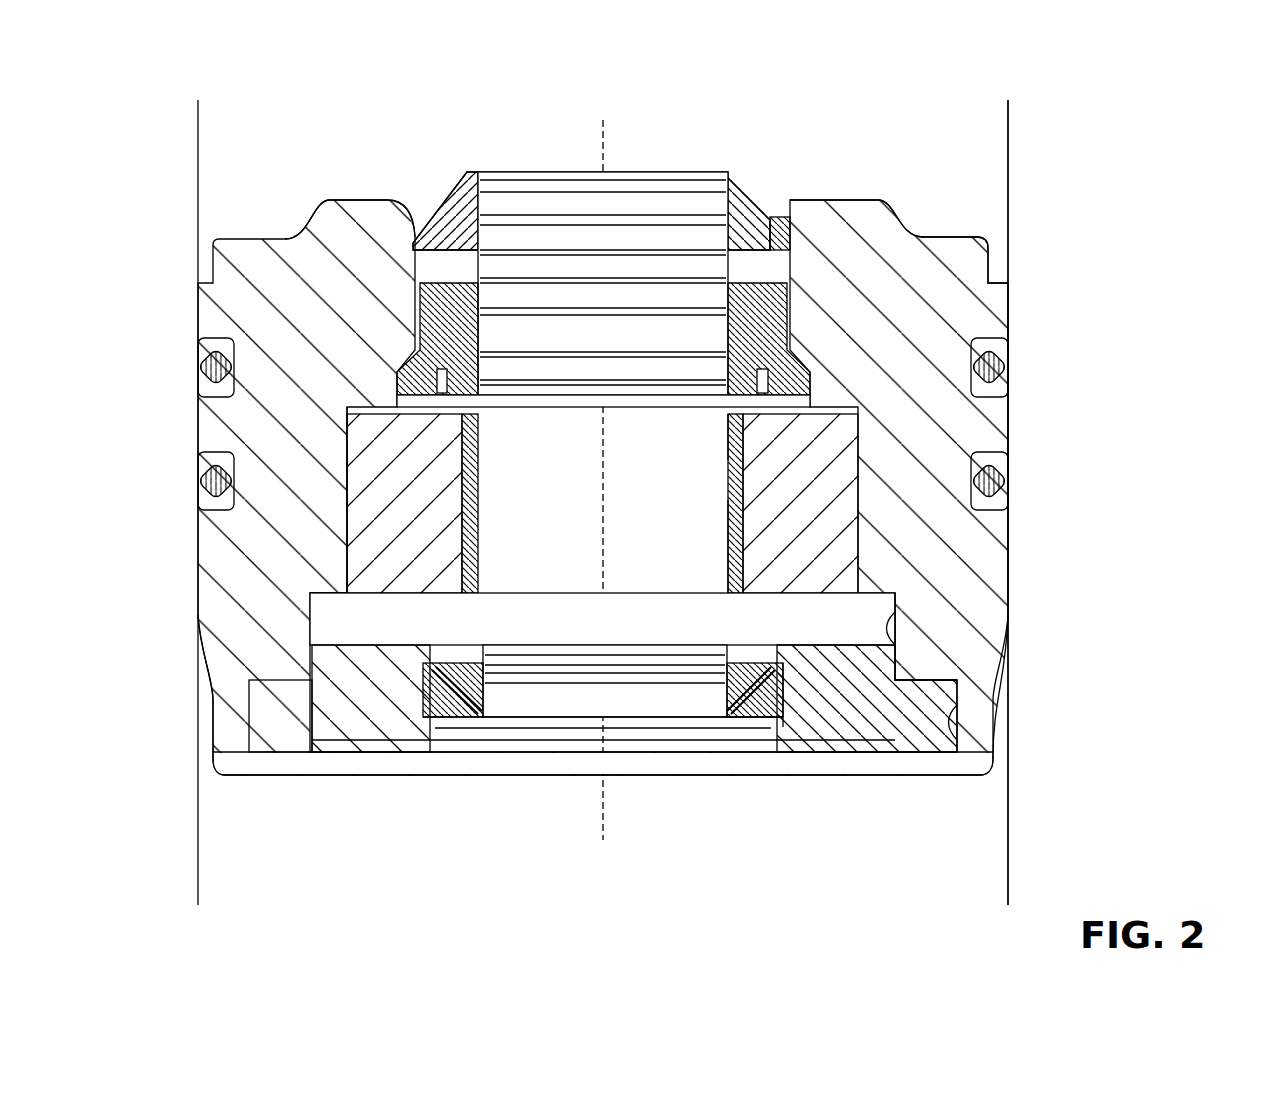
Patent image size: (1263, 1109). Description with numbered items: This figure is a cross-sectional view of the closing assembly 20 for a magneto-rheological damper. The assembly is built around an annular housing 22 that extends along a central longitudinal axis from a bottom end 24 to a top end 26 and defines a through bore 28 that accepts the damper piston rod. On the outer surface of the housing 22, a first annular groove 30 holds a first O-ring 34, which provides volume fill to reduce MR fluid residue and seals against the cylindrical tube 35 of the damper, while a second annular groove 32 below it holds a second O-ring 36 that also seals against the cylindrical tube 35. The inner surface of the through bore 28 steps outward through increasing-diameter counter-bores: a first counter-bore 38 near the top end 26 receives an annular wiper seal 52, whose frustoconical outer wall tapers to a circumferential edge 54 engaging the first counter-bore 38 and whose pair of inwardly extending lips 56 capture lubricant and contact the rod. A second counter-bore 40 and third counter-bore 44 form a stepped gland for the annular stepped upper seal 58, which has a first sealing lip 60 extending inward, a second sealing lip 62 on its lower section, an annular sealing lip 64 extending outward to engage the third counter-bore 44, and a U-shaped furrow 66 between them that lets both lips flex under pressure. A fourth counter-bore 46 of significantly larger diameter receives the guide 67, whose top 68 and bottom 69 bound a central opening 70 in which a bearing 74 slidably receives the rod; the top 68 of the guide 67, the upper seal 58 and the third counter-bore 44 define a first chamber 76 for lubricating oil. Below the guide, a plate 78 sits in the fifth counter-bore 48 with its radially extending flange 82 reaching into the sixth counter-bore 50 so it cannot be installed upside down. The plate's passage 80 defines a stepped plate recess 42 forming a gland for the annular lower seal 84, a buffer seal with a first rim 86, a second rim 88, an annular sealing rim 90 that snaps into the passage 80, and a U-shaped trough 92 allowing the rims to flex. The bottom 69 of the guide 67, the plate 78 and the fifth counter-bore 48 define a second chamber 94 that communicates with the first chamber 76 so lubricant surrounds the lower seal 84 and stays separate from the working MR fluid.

The closing assembly 20 is at (876, 110).
The annular housing 22 is at (902, 548).
The bottom end 24 is at (970, 775).
The top end 26 is at (950, 237).
The through bore 28 is at (430, 200).
The first annular groove 30 is at (198, 397).
The second annular groove 32 is at (197, 505).
The first O-ring 34 is at (1008, 362).
The cylindrical tube 35 is at (1008, 873).
The second O-ring 36 is at (1008, 490).
The first counter-bore 38 is at (398, 235).
The second counter-bore 40 is at (760, 322).
The plate recess 42 is at (427, 683).
The third counter-bore 44 is at (480, 487).
The fourth counter-bore 46 is at (357, 530).
The fifth counter-bore 48 is at (875, 655).
The sixth counter-bore 50 is at (973, 737).
The wiper seal 52 is at (748, 200).
The circumferential edge 54 is at (792, 247).
The inwardly extending lips 56 is at (483, 247).
The upper seal 58 is at (420, 290).
The first sealing lip 60 is at (517, 313).
The second sealing lip 62 is at (522, 400).
The annular sealing lip 64 is at (787, 363).
The U-shaped furrow 66 is at (780, 385).
The guide 67 is at (404, 510).
The top of guide 68 is at (828, 412).
The bottom of guide 69 is at (402, 595).
The central opening 70 is at (737, 467).
The bearing 74 is at (728, 523).
The first chamber 76 is at (728, 423).
The plate 78 is at (331, 711).
The passage 80 is at (440, 733).
The flange 82 is at (293, 728).
The lower seal 84 is at (757, 690).
The first rim 86 is at (723, 677).
The second rim 88 is at (722, 700).
The annular sealing rim 90 is at (770, 728).
The U-shaped trough 92 is at (752, 705).
The second chamber 94 is at (893, 642).